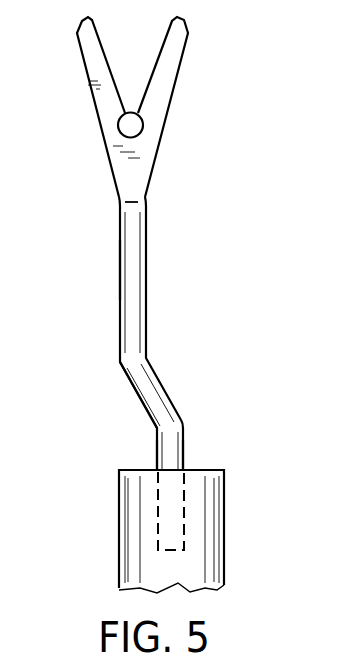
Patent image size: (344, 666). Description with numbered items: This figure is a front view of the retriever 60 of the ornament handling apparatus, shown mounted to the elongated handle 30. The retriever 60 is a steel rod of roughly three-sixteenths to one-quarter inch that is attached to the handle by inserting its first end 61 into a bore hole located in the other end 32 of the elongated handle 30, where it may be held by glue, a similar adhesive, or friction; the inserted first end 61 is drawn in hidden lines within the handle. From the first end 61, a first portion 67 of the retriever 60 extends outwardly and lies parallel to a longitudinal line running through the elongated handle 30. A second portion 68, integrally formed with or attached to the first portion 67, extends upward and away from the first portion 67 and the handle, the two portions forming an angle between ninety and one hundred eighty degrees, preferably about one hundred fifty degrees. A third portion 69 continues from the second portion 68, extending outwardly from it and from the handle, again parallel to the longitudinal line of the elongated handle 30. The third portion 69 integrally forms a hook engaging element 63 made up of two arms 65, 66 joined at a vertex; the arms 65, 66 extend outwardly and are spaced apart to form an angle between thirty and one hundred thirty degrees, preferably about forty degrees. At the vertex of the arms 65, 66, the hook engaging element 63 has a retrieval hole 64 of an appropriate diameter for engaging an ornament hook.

The elongated handle 30 is at (208, 573).
The other end of the elongated handle 32 is at (140, 468).
The retriever 60 is at (146, 280).
The first end of the retriever 61 is at (167, 542).
The hook engaging element 63 is at (125, 175).
The retrieval hole 64 is at (133, 125).
The arm 65 is at (170, 67).
The arm 66 is at (95, 72).
The first portion of the retriever 67 is at (173, 453).
The second portion of the retriever 68 is at (147, 385).
The third portion of the retriever 69 is at (130, 258).